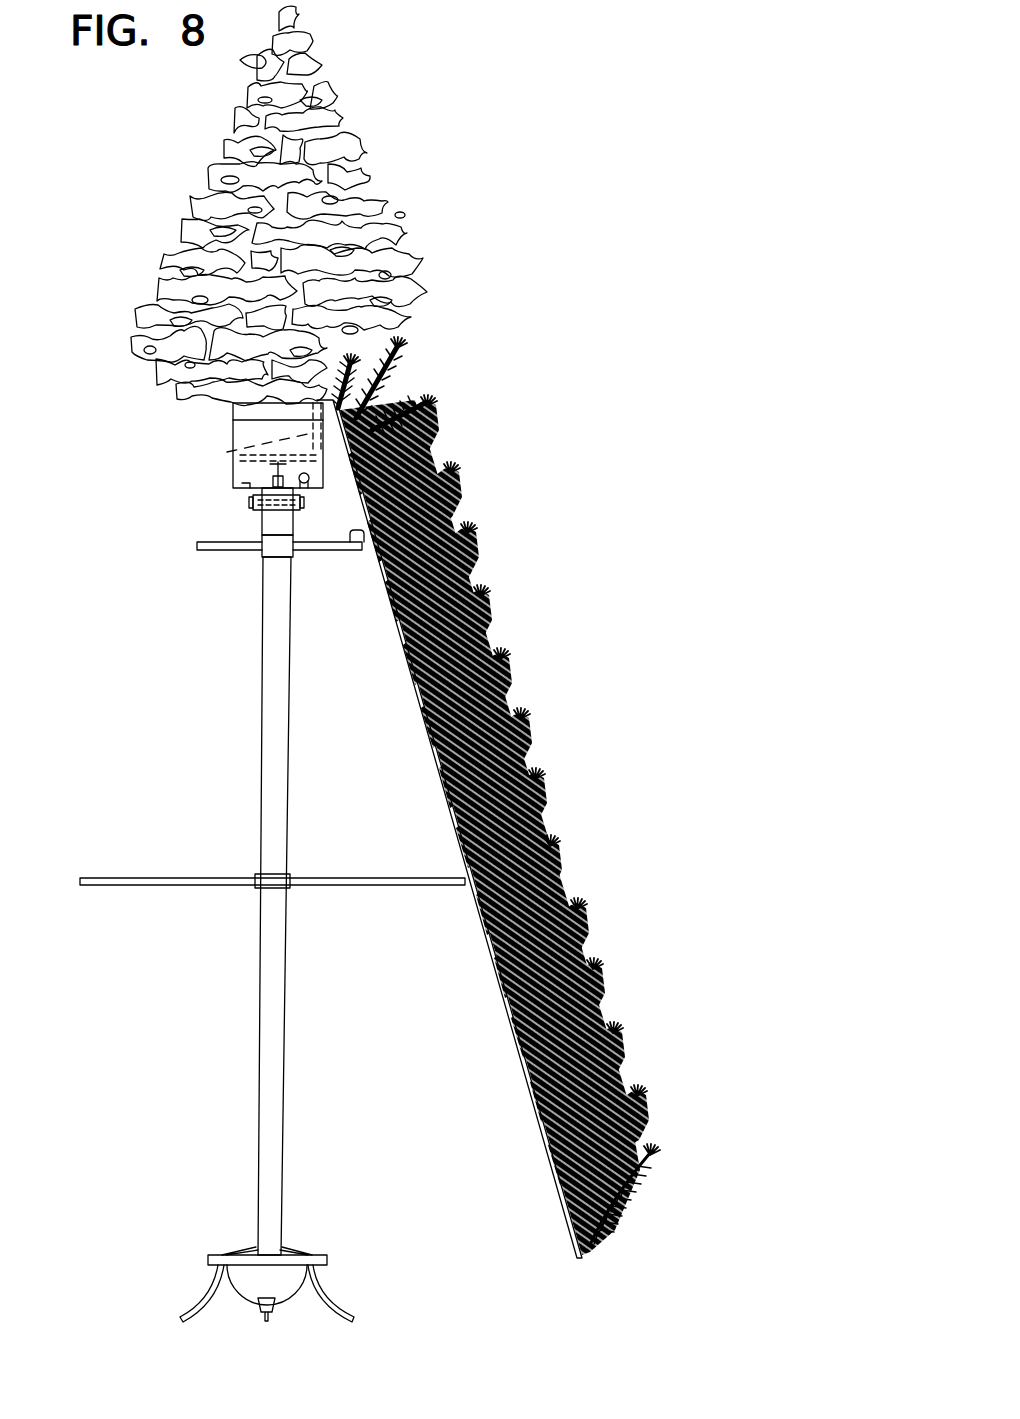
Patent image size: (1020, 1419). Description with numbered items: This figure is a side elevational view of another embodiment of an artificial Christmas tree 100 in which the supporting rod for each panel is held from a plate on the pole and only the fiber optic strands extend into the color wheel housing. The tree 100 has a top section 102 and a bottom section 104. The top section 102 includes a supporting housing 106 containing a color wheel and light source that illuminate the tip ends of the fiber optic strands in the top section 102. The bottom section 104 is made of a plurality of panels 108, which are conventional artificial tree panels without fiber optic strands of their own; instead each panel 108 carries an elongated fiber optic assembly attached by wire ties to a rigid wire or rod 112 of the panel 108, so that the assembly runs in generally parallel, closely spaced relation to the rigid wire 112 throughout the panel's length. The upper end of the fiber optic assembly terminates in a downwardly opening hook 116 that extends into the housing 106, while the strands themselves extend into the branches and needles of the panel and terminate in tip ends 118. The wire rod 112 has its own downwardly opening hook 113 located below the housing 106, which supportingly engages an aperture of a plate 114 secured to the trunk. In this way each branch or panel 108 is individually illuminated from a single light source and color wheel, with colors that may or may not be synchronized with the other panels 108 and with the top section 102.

The tree 100 is at (526, 438).
The top section 102 is at (441, 205).
The bottom section 104 is at (584, 784).
The supporting housing 106 is at (209, 444).
The panel 108 is at (504, 598).
The rigid wire or rod 112 is at (417, 708).
The downwardly opening hook 113 is at (352, 554).
The plate 114 is at (197, 544).
The downwardly opening hook 116 is at (213, 460).
The tip ends 118 is at (573, 900).